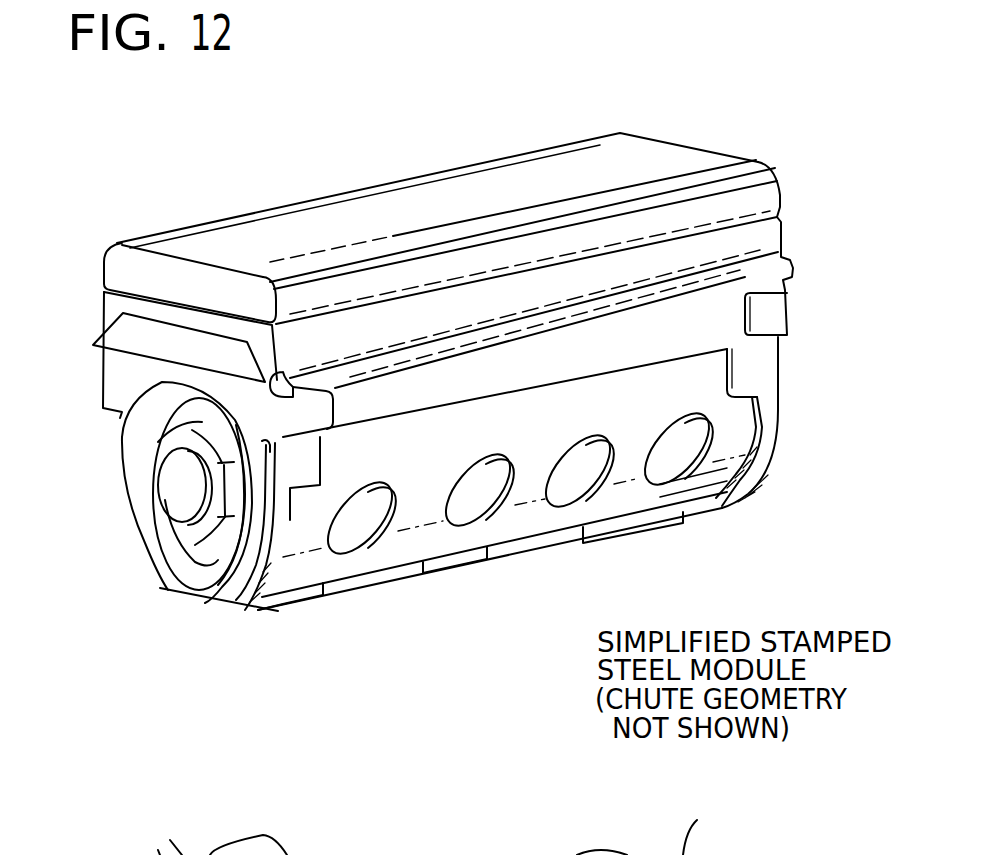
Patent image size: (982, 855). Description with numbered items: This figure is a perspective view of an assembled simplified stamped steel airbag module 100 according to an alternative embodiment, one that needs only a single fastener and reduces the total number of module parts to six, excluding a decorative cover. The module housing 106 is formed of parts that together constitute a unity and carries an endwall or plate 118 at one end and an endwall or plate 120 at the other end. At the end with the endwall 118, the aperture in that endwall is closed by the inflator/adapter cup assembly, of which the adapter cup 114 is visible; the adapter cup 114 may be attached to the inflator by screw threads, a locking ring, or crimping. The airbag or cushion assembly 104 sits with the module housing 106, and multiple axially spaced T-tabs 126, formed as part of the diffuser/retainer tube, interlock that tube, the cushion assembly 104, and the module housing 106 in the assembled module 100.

The simplified stamped steel airbag module 100 is at (288, 191).
The airbag or cushion assembly 104 is at (700, 170).
The module housing 106 is at (708, 386).
The adapter cup 114 is at (187, 563).
The endwall or plate 118 is at (122, 380).
The endwall or plate 120 is at (770, 430).
The T-tabs 126 is at (265, 602).